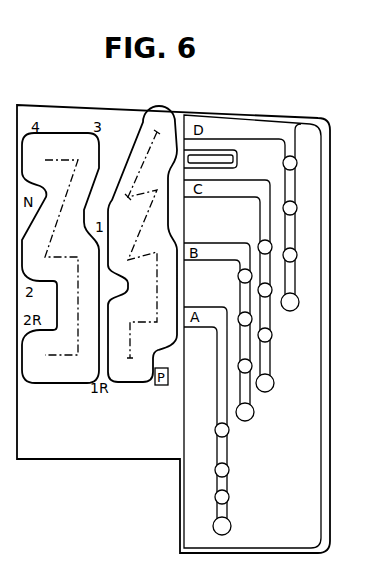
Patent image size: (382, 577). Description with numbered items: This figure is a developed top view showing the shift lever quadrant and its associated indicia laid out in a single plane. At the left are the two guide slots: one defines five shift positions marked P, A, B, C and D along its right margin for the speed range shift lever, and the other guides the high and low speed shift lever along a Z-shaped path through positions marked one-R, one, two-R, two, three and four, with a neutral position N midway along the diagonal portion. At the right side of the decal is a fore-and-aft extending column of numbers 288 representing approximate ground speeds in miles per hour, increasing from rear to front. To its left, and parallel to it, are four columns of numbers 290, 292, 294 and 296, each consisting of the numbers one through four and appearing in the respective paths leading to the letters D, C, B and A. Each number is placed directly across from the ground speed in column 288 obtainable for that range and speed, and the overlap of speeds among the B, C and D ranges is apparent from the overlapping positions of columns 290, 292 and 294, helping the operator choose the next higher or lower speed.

The column of numbers 288 is at (315, 121).
The column of numbers 290 is at (300, 301).
The column of numbers 292 is at (272, 392).
The column of numbers 294 is at (250, 419).
The column of numbers 296 is at (231, 532).